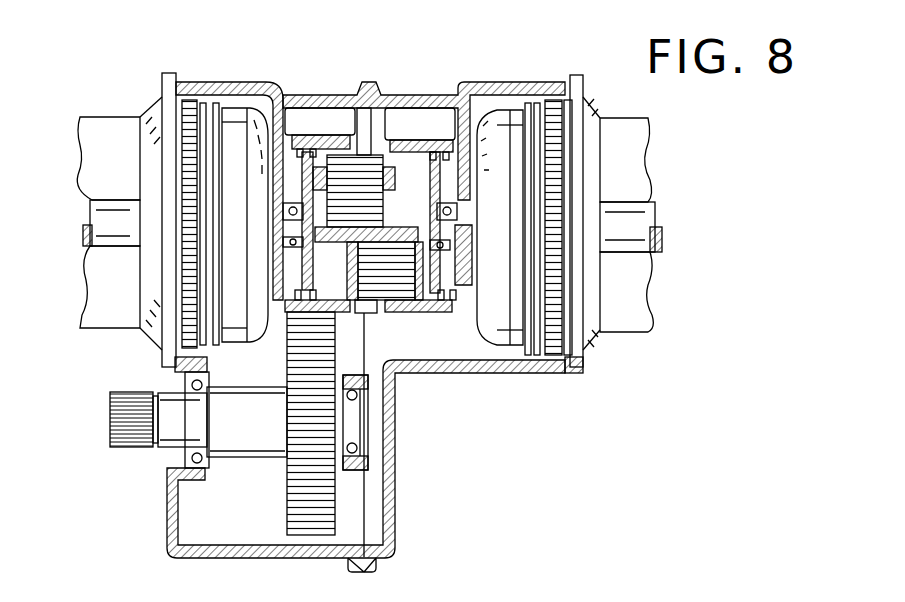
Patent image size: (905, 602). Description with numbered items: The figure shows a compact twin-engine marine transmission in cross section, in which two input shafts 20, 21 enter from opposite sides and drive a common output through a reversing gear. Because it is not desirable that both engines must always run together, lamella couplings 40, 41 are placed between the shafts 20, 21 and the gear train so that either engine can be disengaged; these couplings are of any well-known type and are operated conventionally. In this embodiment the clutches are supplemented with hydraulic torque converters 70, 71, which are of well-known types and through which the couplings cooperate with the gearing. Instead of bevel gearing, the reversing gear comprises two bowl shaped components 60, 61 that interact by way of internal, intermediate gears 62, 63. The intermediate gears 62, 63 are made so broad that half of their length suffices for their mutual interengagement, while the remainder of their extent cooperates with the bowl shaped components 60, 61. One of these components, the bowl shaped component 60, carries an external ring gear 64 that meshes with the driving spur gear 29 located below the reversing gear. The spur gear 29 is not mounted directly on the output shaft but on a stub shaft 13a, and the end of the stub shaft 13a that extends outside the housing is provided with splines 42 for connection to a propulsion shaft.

The shaft 20 is at (102, 213).
The shaft 21 is at (633, 220).
The lamella coupling 40 is at (207, 103).
The lamella coupling 41 is at (535, 120).
The splines 42 is at (133, 430).
The stub shaft 13a is at (245, 430).
The spur gear 29 is at (325, 476).
The bowl shaped component 60 is at (337, 137).
The bowl shaped component 61 is at (420, 143).
The intermediate gear 62 is at (368, 180).
The intermediate gear 63 is at (401, 272).
The external ring gear 64 is at (303, 133).
The hydraulic torque converter 70 is at (261, 130).
The hydraulic torque converter 71 is at (482, 137).